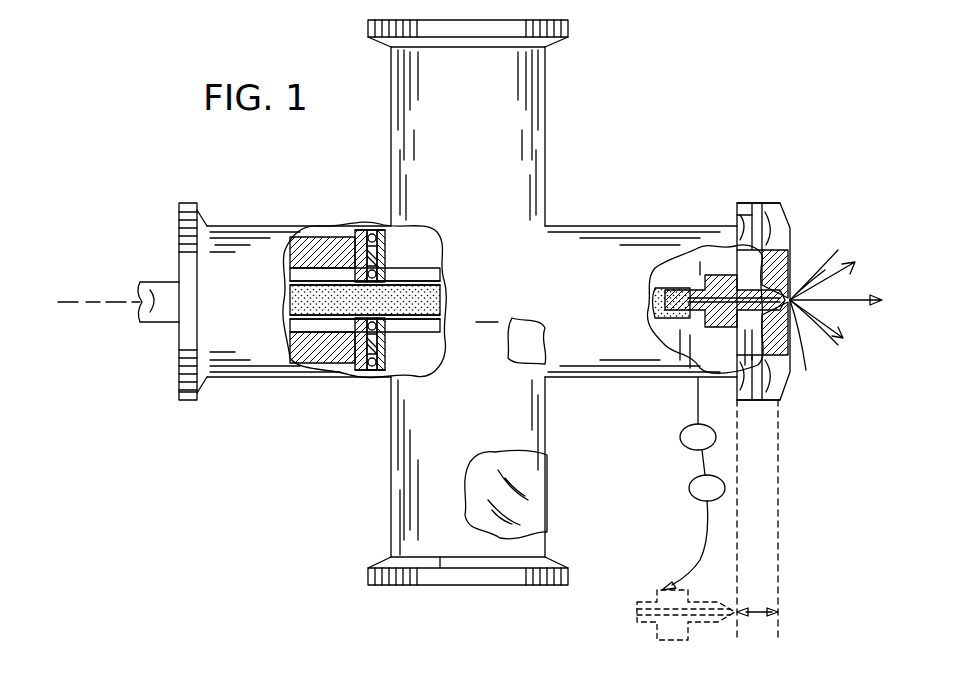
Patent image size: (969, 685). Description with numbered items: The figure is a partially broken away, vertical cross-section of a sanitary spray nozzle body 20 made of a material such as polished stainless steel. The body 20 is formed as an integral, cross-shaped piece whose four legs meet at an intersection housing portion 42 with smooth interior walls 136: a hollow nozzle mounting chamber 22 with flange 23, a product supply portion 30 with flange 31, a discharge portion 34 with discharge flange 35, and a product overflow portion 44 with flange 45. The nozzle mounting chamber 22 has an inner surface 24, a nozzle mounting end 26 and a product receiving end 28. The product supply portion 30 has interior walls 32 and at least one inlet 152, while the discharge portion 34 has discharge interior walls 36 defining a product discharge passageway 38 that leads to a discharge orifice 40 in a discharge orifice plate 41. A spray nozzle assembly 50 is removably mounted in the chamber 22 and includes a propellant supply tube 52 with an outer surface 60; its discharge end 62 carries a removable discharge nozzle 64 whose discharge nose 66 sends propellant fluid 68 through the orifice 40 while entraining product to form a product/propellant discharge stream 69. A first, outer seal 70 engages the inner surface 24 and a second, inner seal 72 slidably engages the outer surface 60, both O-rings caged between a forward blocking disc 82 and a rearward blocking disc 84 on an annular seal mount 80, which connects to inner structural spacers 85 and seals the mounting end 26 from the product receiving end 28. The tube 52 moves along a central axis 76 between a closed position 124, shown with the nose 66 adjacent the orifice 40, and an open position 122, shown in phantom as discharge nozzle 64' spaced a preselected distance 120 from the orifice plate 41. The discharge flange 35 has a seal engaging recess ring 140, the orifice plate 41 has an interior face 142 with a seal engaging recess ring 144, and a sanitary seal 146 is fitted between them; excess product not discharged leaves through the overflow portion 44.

The body 20 is at (662, 90).
The hollow nozzle mounting chamber 22 is at (230, 228).
The flange 23 is at (188, 206).
The inner surface 24 is at (327, 240).
The nozzle mounting end 26 is at (185, 402).
The product receiving end 28 is at (385, 372).
The product supply portion 30 is at (552, 516).
The flange 31 is at (572, 578).
The interior walls 32 is at (545, 492).
The discharge portion 34 is at (600, 226).
The discharge flange 35 is at (745, 402).
The discharge interior walls 36 is at (735, 262).
The product discharge passageway 38 is at (665, 263).
The discharge orifice 40 is at (792, 312).
The discharge orifice plate 41 is at (793, 265).
The intersection housing portion 42 is at (486, 312).
The product overflow portion 44 is at (548, 72).
The flange 45 is at (571, 24).
The spray nozzle assembly 50 is at (155, 322).
The propellant supply tube 52 is at (160, 304).
The outer surface 60 is at (452, 281).
The discharge end 62 is at (700, 262).
The discharge nozzle 64 is at (828, 297).
The discharge nozzle in wide open position 64' is at (686, 630).
The discharge nose 66 is at (852, 265).
The propellant fluid 68 is at (300, 306).
The product/propellant discharge stream 69 is at (866, 305).
The first, outer seal 70 is at (361, 232).
The second, inner seal 72 is at (430, 272).
The central axis 76 is at (93, 305).
The seal mount 80 is at (400, 235).
The forward blocking disc 82 is at (405, 240).
The rearward blocking disc 84 is at (345, 248).
The inner structural spacers 85 is at (297, 270).
The preselected distance 120 is at (760, 614).
The open position 122 is at (693, 520).
The closed position 124 is at (698, 414).
The interior walls 136 is at (535, 317).
The seal engaging recess ring 140 is at (740, 212).
The interior face 142 is at (768, 203).
The seal engaging recess ring 144 is at (782, 210).
The sanitary seal 146 is at (752, 205).
The inlet 152 is at (490, 587).